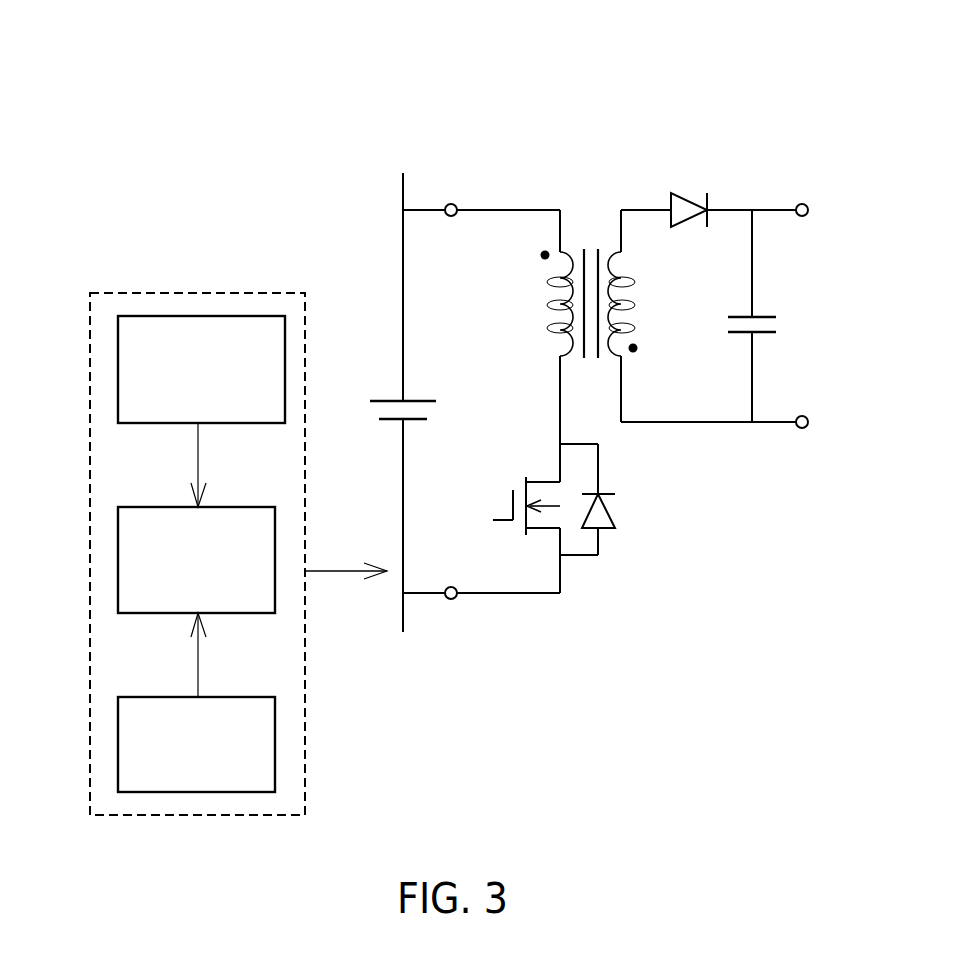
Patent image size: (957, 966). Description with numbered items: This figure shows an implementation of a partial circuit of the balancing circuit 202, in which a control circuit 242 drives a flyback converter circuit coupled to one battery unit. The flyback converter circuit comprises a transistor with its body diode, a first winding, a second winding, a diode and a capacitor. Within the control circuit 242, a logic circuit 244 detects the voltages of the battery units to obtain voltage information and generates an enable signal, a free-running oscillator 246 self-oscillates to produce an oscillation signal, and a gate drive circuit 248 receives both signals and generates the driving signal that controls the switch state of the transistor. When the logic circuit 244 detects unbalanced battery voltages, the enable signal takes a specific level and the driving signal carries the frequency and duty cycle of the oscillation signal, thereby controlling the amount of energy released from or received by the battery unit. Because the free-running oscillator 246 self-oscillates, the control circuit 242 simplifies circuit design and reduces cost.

The balancing circuit 202 is at (701, 109).
The control circuit 242 is at (90, 464).
The logic circuit 244 is at (118, 745).
The free-running oscillator 246 is at (118, 378).
The gate drive circuit 248 is at (118, 568).